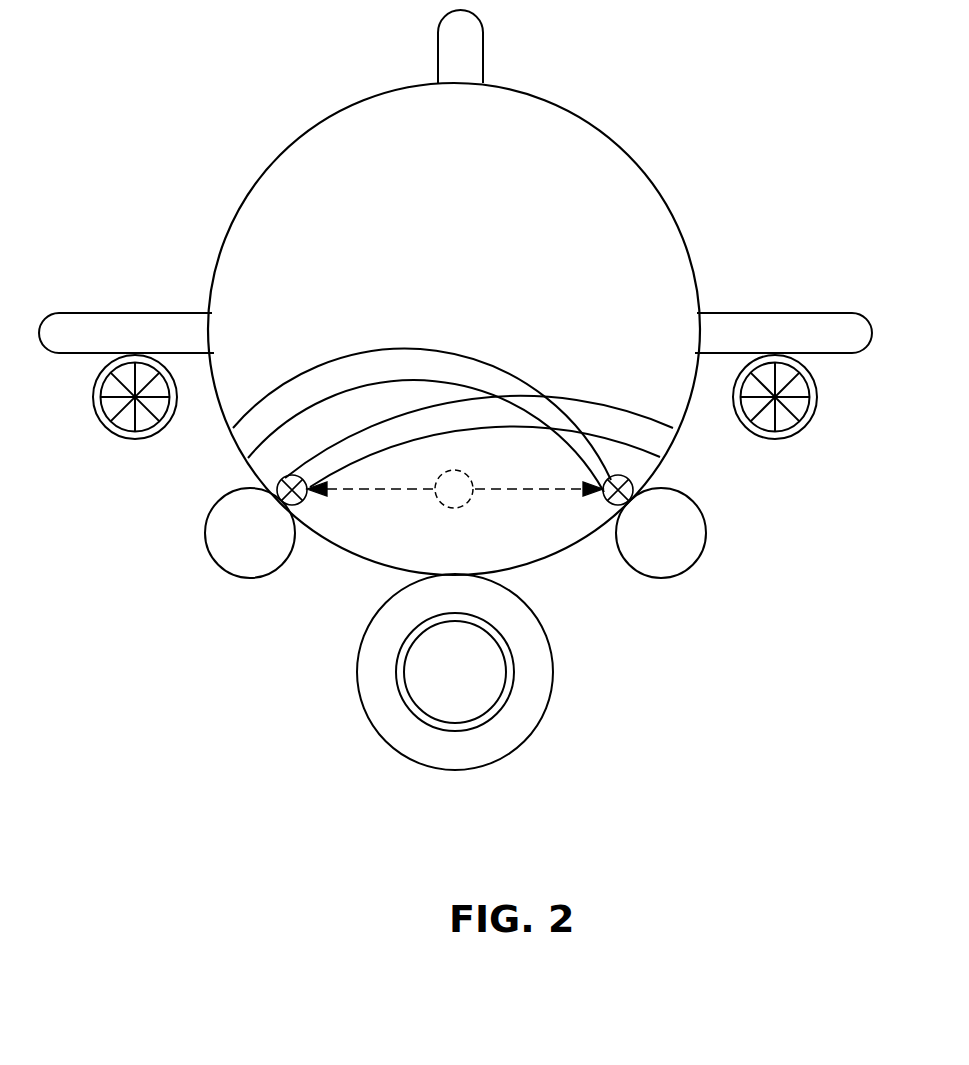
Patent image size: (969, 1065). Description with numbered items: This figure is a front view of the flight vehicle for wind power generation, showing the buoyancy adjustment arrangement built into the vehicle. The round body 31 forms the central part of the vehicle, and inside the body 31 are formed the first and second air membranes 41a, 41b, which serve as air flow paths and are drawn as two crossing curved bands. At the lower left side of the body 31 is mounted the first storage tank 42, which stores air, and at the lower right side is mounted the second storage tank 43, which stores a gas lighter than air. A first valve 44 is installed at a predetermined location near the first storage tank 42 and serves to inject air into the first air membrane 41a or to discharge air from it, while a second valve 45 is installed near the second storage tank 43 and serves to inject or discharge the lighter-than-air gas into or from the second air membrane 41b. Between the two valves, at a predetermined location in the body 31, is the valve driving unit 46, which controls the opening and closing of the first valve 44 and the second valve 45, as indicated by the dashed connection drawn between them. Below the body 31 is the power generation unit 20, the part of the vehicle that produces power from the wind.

The body 31 is at (237, 210).
The first air membrane 41a is at (385, 435).
The second air membrane 41b is at (573, 430).
The first valve 44 is at (281, 484).
The second valve 45 is at (632, 487).
The valve driving unit 46 is at (466, 502).
The first storage tank 42 is at (222, 565).
The second storage tank 43 is at (698, 557).
The power generation unit 20 is at (453, 757).